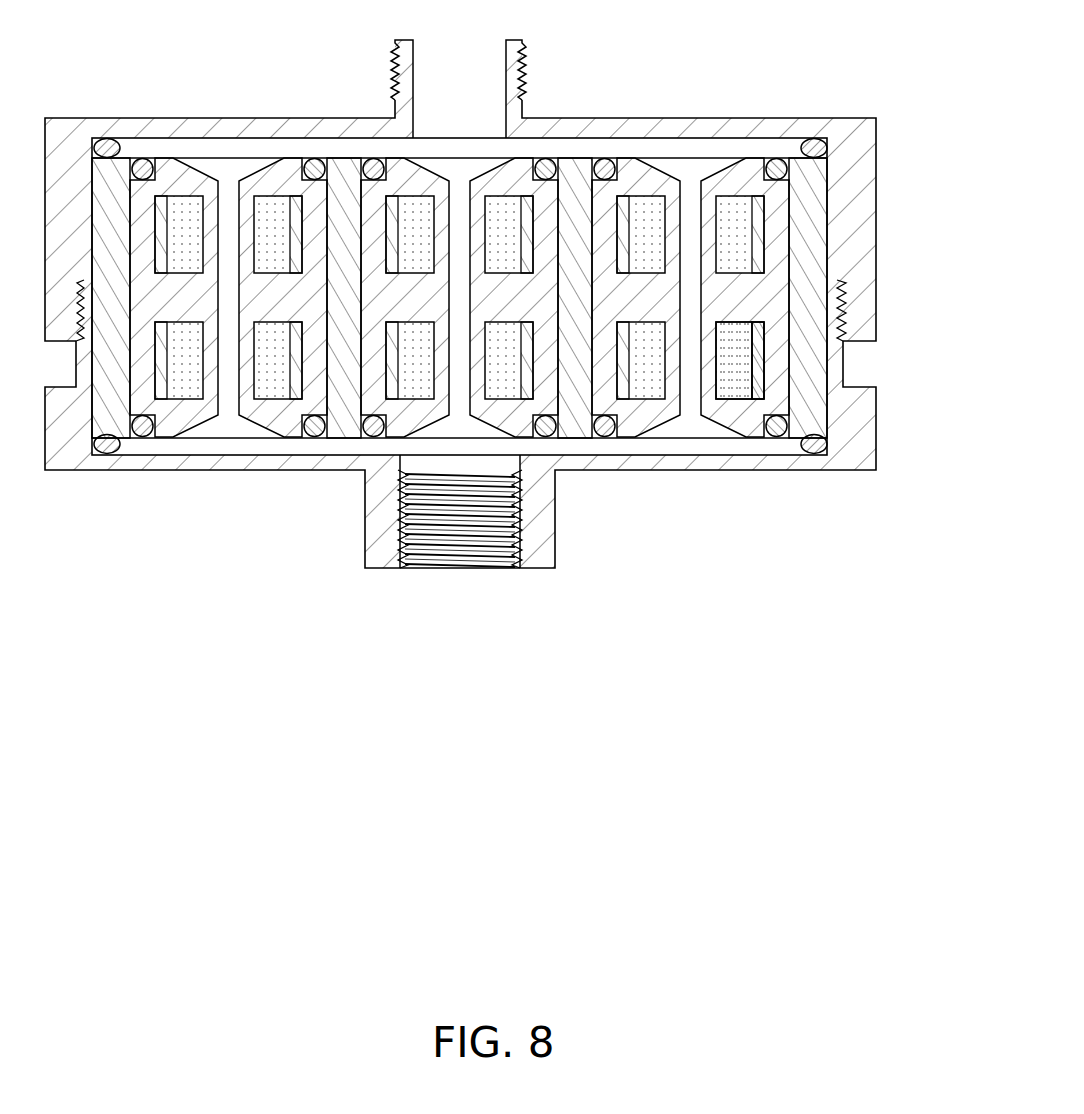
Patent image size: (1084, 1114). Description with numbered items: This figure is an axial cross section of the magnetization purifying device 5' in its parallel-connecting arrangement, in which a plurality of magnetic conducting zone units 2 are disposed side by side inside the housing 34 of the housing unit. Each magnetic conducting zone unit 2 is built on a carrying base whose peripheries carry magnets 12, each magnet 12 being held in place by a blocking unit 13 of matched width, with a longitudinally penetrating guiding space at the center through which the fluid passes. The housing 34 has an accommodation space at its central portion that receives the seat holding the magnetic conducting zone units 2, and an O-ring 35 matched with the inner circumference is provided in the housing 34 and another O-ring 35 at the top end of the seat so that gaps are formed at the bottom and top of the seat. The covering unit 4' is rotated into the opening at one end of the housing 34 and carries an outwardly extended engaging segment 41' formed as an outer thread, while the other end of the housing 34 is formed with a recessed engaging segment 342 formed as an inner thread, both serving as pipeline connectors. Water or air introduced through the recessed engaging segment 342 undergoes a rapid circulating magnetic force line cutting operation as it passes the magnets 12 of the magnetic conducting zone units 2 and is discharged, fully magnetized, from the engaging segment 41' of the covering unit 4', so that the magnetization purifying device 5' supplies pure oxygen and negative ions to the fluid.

The magnetization purifying device 5' is at (503, 285).
The magnetic conducting zone unit 2 is at (405, 175).
The engaging segment 41' is at (520, 88).
The O-ring 35 is at (812, 145).
The covering unit 4' is at (495, 247).
The blocking unit 13 is at (760, 367).
The magnet 12 is at (742, 388).
The housing 34 is at (863, 445).
The recessed engaging segment 342 is at (553, 527).